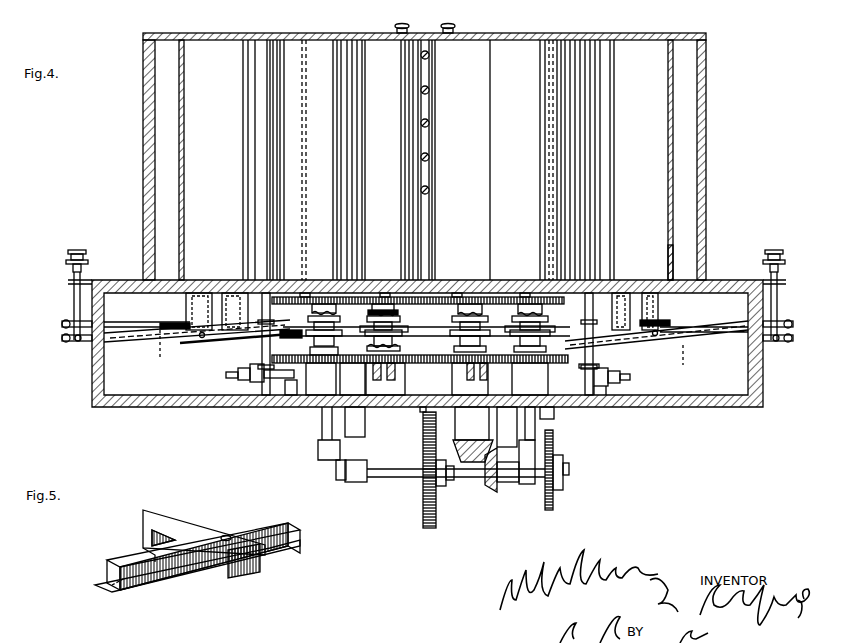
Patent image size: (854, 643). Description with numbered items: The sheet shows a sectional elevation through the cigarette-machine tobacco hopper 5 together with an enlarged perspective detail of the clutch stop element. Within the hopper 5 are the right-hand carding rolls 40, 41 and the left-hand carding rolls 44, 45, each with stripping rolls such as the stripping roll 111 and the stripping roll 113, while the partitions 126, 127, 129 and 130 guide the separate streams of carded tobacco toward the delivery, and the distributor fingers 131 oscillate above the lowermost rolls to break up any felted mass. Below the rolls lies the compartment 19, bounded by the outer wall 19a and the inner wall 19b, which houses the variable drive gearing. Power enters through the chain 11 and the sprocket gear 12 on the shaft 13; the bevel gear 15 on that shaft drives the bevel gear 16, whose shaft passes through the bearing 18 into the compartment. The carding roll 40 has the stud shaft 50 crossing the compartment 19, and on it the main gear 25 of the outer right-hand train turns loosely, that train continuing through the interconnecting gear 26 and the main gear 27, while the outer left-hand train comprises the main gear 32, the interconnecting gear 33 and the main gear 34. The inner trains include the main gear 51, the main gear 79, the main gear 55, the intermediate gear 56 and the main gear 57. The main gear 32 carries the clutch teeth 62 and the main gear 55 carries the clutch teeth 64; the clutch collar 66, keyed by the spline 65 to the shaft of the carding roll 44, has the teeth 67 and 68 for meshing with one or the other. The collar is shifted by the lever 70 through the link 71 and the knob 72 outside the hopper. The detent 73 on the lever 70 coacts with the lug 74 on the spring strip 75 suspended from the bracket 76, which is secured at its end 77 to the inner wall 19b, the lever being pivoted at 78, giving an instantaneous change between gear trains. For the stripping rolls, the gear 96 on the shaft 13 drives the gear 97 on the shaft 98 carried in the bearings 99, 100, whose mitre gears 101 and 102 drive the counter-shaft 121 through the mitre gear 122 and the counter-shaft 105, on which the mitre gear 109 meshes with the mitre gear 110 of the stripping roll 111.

In FIG. 4, the hopper 5 is at (704, 103).
In FIG. 4, the chain 11 is at (553, 505).
In FIG. 4, the sprocket gear 12 is at (570, 468).
In FIG. 4, the shaft 13 is at (450, 482).
In FIG. 4, the bevel gear 15 is at (490, 492).
In FIG. 4, the bevel gear 16 is at (472, 462).
In FIG. 4, the bearing 18 is at (424, 405).
In FIG. 4, the compartment 19 is at (677, 404).
In FIG. 4, the outer wall 19a is at (218, 404).
In FIG. 4, the inner wall 19b is at (678, 271).
In FIG. 4, the main gear 25 is at (452, 366).
In FIG. 4, the interconnecting gear 26 is at (512, 366).
In FIG. 4, the main gear 27 is at (556, 404).
In FIG. 4, the main gear 32 is at (418, 402).
In FIG. 4, the interconnecting gear 33 is at (364, 364).
In FIG. 4, the main gear 34 is at (290, 404).
In FIG. 4, the carding roll 40 is at (471, 160).
In FIG. 4, the carding roll 41 is at (539, 160).
In FIG. 4, the carding roll 44 is at (361, 160).
In FIG. 4, the carding roll 45 is at (315, 160).
In FIG. 4, the stud shaft 50 is at (470, 307).
In FIG. 4, the main gear 51 is at (440, 292).
In FIG. 4, the main gear 55 is at (396, 292).
In FIG. 4, the intermediate gear 56 is at (375, 296).
In FIG. 4, the main gear 57 is at (306, 292).
In FIG. 4, the clutch teeth 62 is at (401, 352).
In FIG. 4, the clutch teeth 64 is at (395, 309).
In FIG. 4, the spline 65 is at (289, 339).
In FIG. 4, the clutch collar 66 is at (450, 338).
In FIG. 4, the clutch teeth 67 is at (370, 344).
In FIG. 4, the clutch teeth 68 is at (368, 313).
In FIG. 4, the lever 70 is at (129, 327).
In FIG. 5, the lever 70 is at (125, 560).
In FIG. 4, the link 71 is at (73, 312).
In FIG. 4, the knob 72 is at (66, 260).
In FIG. 4, the detent 73 is at (423, 348).
In FIG. 5, the detent 73 is at (120, 590).
In FIG. 4, the lug 74 is at (160, 322).
In FIG. 5, the lug 74 is at (102, 592).
In FIG. 4, the spring strip 75 is at (188, 344).
In FIG. 5, the spring strip 75 is at (190, 578).
In FIG. 4, the bracket 76 is at (230, 313).
In FIG. 5, the bracket 76 is at (186, 522).
In FIG. 4, the end 77 is at (232, 292).
In FIG. 5, the end 77 is at (143, 530).
In FIG. 4, the pivot 78 is at (203, 338).
In FIG. 5, the pivot 78 is at (230, 535).
In FIG. 4, the main gear 79 is at (522, 292).
In FIG. 4, the gear 96 is at (423, 516).
In FIG. 4, the gear 97 is at (420, 476).
In FIG. 4, the shaft 98 is at (377, 478).
In FIG. 4, the bearing 99 is at (357, 482).
In FIG. 4, the bearing 100 is at (506, 482).
In FIG. 4, the mitre gear 101 is at (338, 478).
In FIG. 4, the mitre gear 102 is at (530, 486).
In FIG. 4, the counter-shaft 105 is at (622, 375).
In FIG. 4, the mitre gear 109 is at (598, 408).
In FIG. 4, the mitre gear 110 is at (594, 364).
In FIG. 4, the stripping roll 111 is at (592, 196).
In FIG. 4, the stripping roll 113 is at (262, 153).
In FIG. 4, the counter-shaft 121 is at (258, 404).
In FIG. 4, the mitre gear 122 is at (320, 464).
In FIG. 4, the partition 126 is at (614, 145).
In FIG. 4, the partition 127 is at (673, 173).
In FIG. 4, the partition 129 is at (242, 128).
In FIG. 4, the partition 130 is at (178, 121).
In FIG. 4, the fingers 131 is at (430, 122).